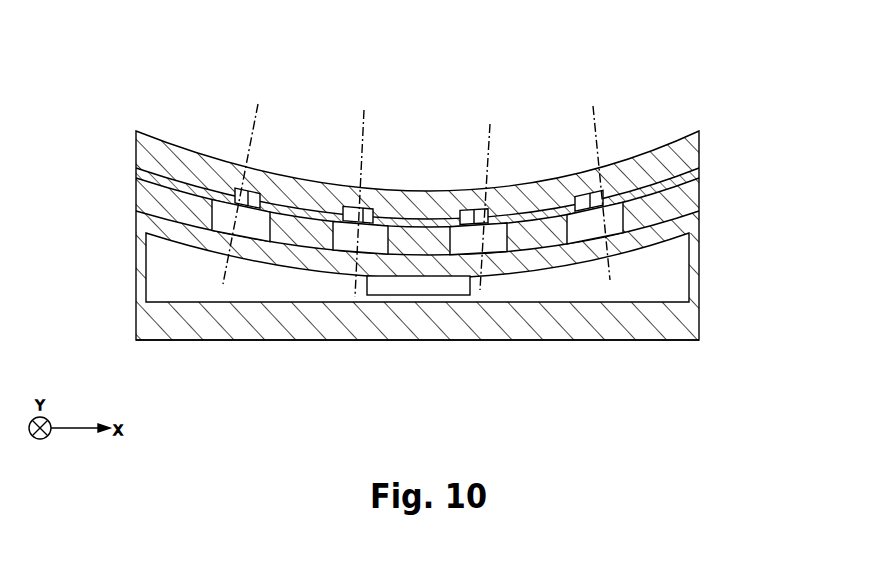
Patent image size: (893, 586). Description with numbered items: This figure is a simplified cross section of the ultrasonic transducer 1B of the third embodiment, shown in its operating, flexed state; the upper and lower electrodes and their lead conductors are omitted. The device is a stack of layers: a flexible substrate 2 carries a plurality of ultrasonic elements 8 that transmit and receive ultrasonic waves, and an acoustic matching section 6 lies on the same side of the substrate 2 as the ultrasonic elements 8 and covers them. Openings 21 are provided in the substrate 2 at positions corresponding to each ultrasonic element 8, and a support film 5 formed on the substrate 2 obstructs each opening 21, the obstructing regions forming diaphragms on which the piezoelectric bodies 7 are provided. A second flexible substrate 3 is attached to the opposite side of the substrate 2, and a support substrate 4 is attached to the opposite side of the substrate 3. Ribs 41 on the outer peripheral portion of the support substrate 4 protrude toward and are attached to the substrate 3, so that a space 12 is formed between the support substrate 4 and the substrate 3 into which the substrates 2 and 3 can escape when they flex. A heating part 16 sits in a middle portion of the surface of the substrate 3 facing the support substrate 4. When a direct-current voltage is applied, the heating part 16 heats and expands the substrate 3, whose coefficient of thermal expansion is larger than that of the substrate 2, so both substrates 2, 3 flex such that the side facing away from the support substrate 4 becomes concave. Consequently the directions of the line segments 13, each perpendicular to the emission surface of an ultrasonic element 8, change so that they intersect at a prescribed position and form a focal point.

The ultrasonic transducer 1B is at (645, 60).
The substrate 2 is at (700, 193).
The substrate 3 is at (700, 223).
The support substrate 4 is at (597, 330).
The support film 5 is at (700, 173).
The acoustic matching section 6 is at (700, 150).
The piezoelectric body 7 is at (240, 190).
The ultrasonic element 8 is at (262, 179).
The space 12 is at (557, 295).
The line segment 13 is at (416, 191).
The heating part 16 is at (437, 285).
The opening 21 is at (256, 223).
The rib 41 is at (700, 273).